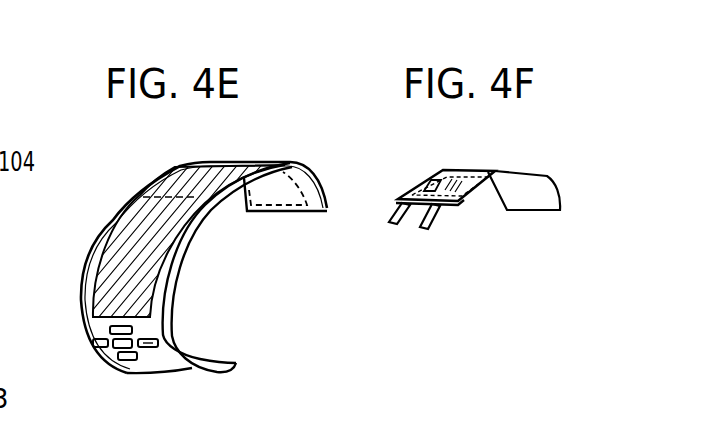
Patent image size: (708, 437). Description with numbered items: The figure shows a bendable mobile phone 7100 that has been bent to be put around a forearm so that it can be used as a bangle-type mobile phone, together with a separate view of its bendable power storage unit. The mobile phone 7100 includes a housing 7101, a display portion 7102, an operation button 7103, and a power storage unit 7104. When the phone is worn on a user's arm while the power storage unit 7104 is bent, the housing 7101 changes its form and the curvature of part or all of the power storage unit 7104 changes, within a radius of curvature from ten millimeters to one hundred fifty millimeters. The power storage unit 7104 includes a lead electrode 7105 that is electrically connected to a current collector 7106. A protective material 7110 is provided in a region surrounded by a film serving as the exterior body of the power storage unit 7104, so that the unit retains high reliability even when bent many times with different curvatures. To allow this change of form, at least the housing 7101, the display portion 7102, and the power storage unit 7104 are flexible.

In FIG. 4E, the mobile phone 7100 is at (123, 195).
In FIG. 4E, the housing 7101 is at (110, 358).
In FIG. 4E, the display portion 7102 is at (123, 273).
In FIG. 4E, the operation button 7103 is at (158, 343).
In FIG. 4E, the power storage unit 7104 is at (283, 196).
In FIG. 4F, the power storage unit 7104 is at (512, 198).
In FIG. 4F, the lead electrode 7105 is at (436, 225).
In FIG. 4F, the current collector 7106 is at (452, 170).
In FIG. 4F, the protective material 7110 is at (470, 207).